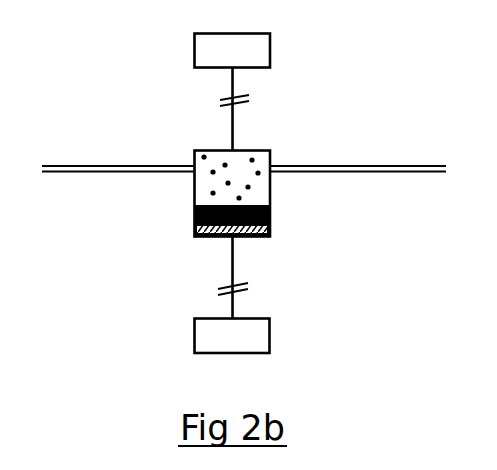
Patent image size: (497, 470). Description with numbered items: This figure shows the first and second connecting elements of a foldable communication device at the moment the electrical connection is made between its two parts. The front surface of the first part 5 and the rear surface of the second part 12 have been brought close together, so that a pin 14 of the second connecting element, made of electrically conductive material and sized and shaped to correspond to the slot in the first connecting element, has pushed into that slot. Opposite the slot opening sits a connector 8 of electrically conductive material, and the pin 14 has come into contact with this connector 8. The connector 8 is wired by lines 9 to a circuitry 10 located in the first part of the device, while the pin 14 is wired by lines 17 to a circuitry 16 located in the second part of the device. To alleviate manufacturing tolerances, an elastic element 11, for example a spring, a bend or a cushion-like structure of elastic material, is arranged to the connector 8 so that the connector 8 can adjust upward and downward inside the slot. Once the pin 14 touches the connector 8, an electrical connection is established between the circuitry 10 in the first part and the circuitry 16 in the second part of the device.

The front surface of the first part 5 is at (244, 167).
The connector 8 is at (272, 220).
The lines 9 is at (231, 272).
The circuitry 10 is at (269, 340).
The elastic element 11 is at (272, 231).
The rear surface of the second part 12 is at (73, 161).
The pin 14 is at (251, 188).
The circuitry 16 is at (252, 52).
The lines 17 is at (237, 124).